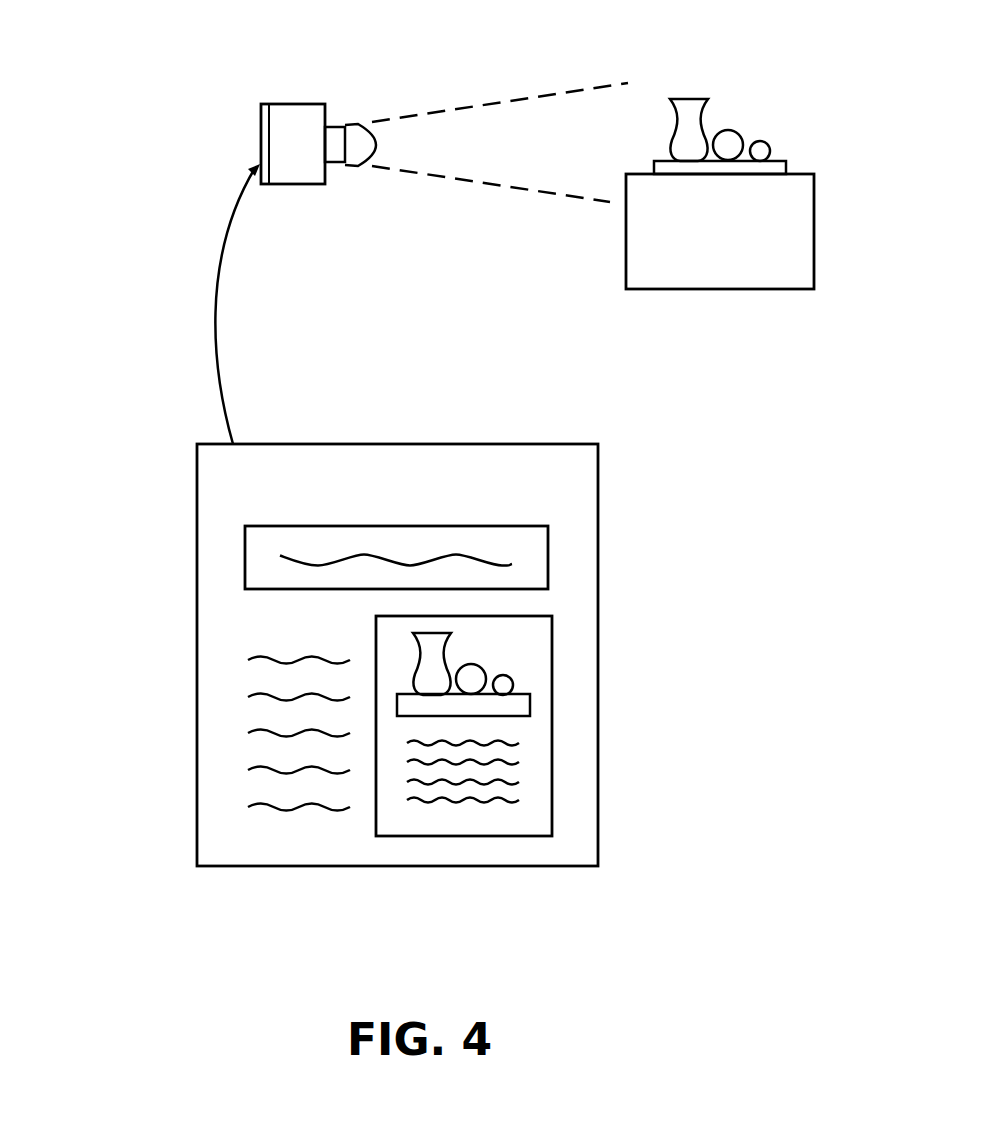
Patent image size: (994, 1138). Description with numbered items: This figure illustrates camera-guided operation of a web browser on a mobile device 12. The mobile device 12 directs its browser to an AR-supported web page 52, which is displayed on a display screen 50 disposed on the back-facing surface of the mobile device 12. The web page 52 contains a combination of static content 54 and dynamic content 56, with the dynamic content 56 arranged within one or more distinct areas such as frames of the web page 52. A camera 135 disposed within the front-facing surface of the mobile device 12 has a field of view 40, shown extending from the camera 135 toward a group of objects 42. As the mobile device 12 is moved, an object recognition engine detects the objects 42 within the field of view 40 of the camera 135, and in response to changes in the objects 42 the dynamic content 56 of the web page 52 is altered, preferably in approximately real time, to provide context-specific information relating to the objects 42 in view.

The mobile device 12 is at (294, 104).
The camera 135 is at (331, 125).
The field of view 40 is at (378, 147).
The objects 42 is at (739, 47).
The display screen 50 is at (261, 145).
The web page 52 is at (397, 655).
The static content 54 is at (268, 710).
The dynamic content 56 is at (553, 756).